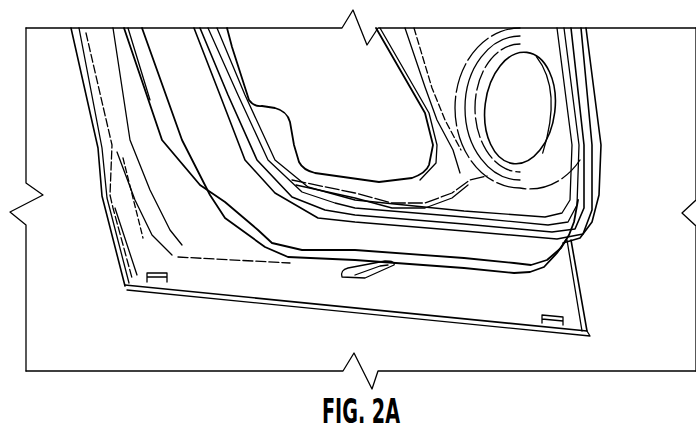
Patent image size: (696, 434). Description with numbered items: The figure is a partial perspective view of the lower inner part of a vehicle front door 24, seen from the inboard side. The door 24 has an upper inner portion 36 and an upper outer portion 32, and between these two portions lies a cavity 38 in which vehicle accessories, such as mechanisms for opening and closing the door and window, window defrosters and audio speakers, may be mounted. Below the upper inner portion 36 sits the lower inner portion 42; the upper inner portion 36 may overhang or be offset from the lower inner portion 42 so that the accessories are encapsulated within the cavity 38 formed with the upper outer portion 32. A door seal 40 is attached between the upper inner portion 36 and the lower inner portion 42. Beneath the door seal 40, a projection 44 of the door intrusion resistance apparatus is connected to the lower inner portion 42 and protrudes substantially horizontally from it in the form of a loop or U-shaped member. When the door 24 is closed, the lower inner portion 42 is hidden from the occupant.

The door 24 is at (89, 177).
The upper outer portion 32 is at (287, 73).
The upper inner portion 36 is at (599, 92).
The cavity 38 is at (527, 127).
The door seal 40 is at (514, 263).
The lower inner portion 42 is at (504, 294).
The projection 44 is at (350, 268).